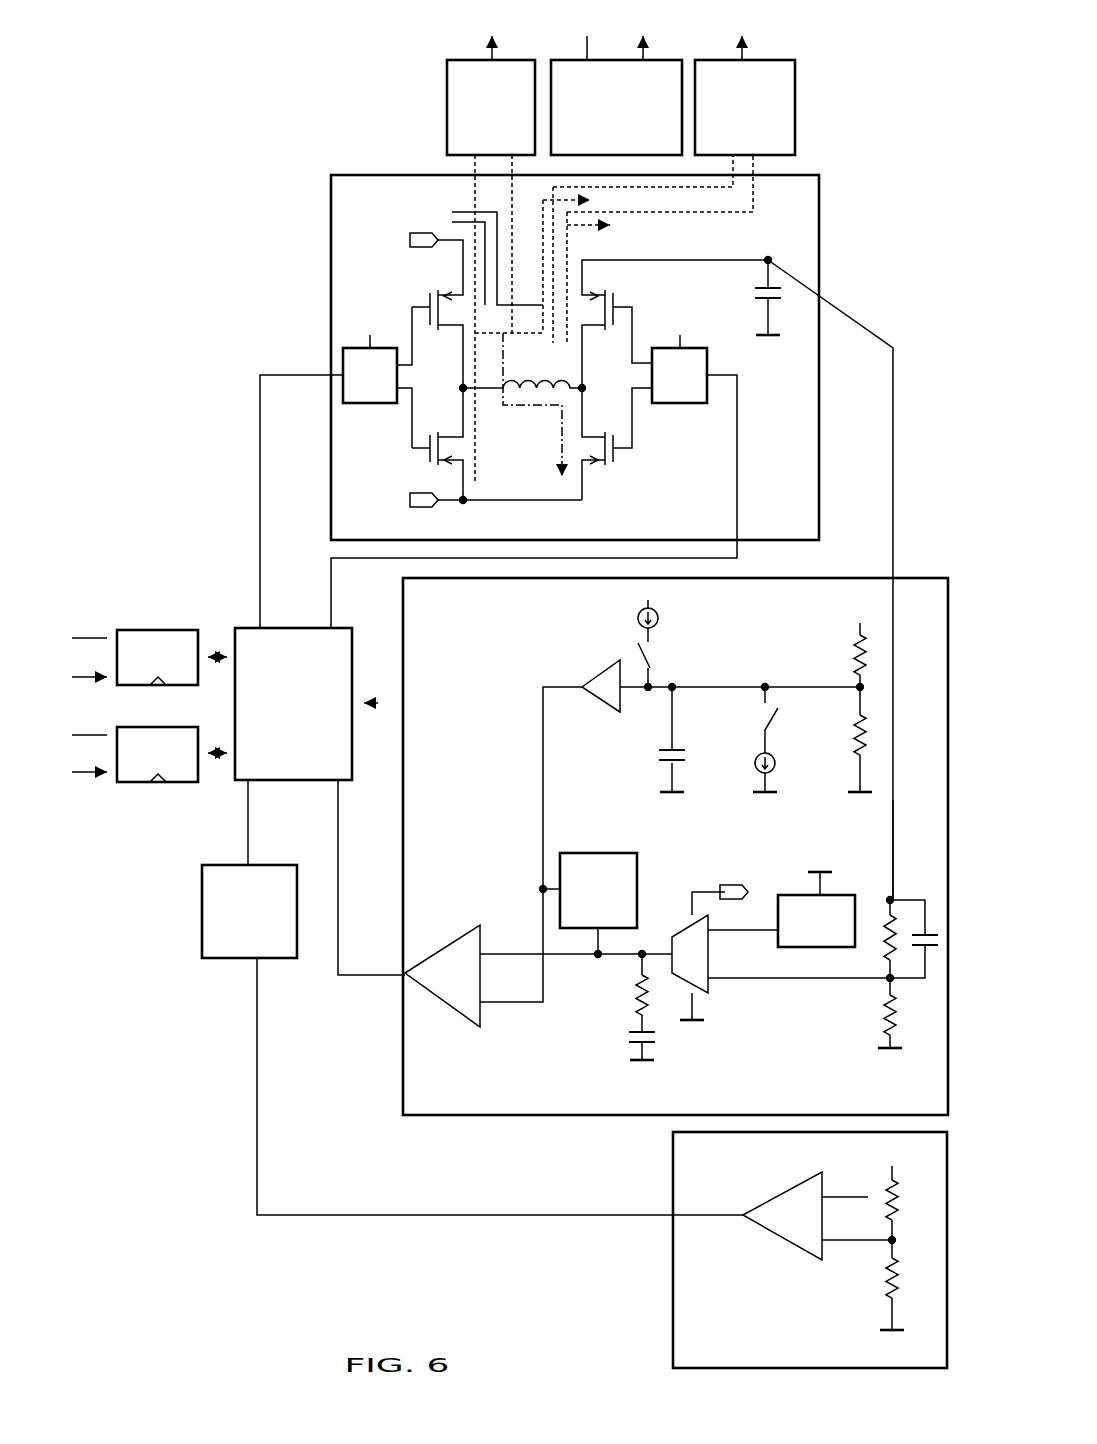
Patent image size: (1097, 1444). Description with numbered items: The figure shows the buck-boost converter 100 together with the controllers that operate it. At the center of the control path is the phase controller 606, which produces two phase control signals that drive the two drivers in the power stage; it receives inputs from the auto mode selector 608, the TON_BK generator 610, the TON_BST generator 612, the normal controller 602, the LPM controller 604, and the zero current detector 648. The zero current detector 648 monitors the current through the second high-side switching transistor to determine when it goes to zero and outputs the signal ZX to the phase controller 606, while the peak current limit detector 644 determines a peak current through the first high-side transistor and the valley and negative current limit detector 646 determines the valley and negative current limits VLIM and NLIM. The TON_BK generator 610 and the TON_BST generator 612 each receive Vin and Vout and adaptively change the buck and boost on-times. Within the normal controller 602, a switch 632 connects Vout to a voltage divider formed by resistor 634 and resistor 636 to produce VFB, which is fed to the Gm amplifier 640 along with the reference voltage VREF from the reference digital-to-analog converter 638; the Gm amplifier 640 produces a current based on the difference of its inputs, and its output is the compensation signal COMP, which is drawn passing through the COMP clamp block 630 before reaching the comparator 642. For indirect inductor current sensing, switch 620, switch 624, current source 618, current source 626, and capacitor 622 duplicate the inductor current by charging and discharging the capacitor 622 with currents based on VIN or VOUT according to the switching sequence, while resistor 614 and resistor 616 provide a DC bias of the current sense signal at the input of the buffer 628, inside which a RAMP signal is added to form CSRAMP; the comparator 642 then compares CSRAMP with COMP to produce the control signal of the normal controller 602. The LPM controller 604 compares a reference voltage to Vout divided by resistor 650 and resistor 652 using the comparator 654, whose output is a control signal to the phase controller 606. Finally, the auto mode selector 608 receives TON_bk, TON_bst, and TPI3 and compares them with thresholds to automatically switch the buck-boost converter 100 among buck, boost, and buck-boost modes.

The buck-boost converter 100 is at (818, 175).
The normal controller 602 is at (403, 1045).
The LPM controller 604 is at (673, 1327).
The phase controller 606 is at (252, 628).
The auto mode selector 608 is at (202, 915).
The TON_BK generator 610 is at (153, 630).
The TON_BST generator 612 is at (140, 782).
The resistor 614 is at (855, 660).
The resistor 616 is at (855, 750).
The current source 618 is at (755, 769).
The switch 620 is at (778, 710).
The capacitor 622 is at (660, 752).
The switch 624 is at (640, 652).
The current source 626 is at (640, 611).
The buffer 628 is at (612, 712).
The comp clamp 630 is at (612, 853).
The switch 632 is at (900, 853).
The resistor 634 is at (885, 930).
The resistor 636 is at (885, 1005).
The reference digital-to-analog converter 638 is at (778, 899).
The Gm amplifier 640 is at (702, 992).
The comparator 642 is at (445, 942).
The peak current limit detector 644 is at (460, 60).
The valley and negative current limit detector 646 is at (652, 60).
The zero current detector 648 is at (798, 106).
The resistor 650 is at (900, 1200).
The resistor 652 is at (885, 1262).
The comparator 654 is at (795, 1190).